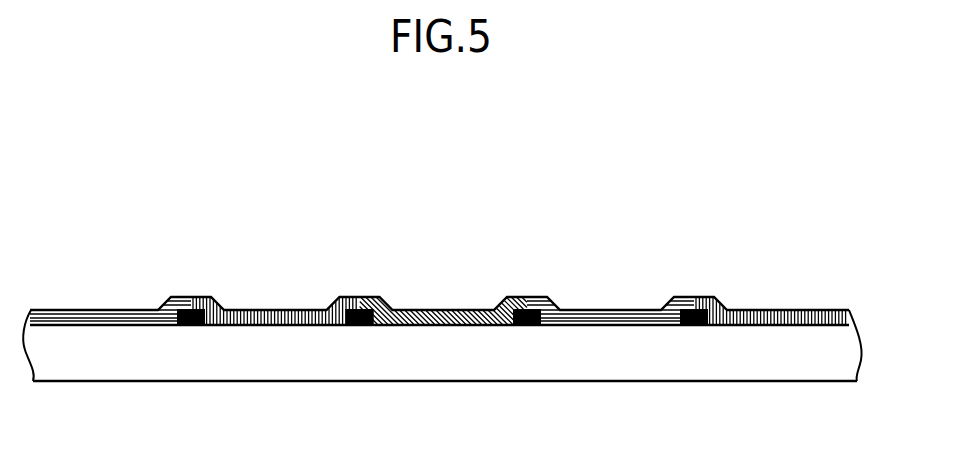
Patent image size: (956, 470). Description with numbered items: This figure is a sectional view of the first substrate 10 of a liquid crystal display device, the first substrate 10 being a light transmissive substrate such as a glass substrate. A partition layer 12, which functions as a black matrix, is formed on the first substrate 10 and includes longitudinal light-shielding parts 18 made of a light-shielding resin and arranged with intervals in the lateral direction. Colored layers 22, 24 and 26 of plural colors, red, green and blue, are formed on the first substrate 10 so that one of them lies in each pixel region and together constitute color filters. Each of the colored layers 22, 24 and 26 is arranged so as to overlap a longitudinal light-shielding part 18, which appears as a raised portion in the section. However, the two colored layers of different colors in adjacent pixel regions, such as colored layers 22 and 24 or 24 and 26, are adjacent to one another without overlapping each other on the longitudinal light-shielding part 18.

The first substrate 10 is at (655, 375).
The partition layer 12 is at (193, 324).
The longitudinal light-shielding part 18 is at (193, 324).
The colored layer 22 is at (275, 317).
The colored layer 24 is at (443, 317).
The colored layer 26 is at (98, 312).